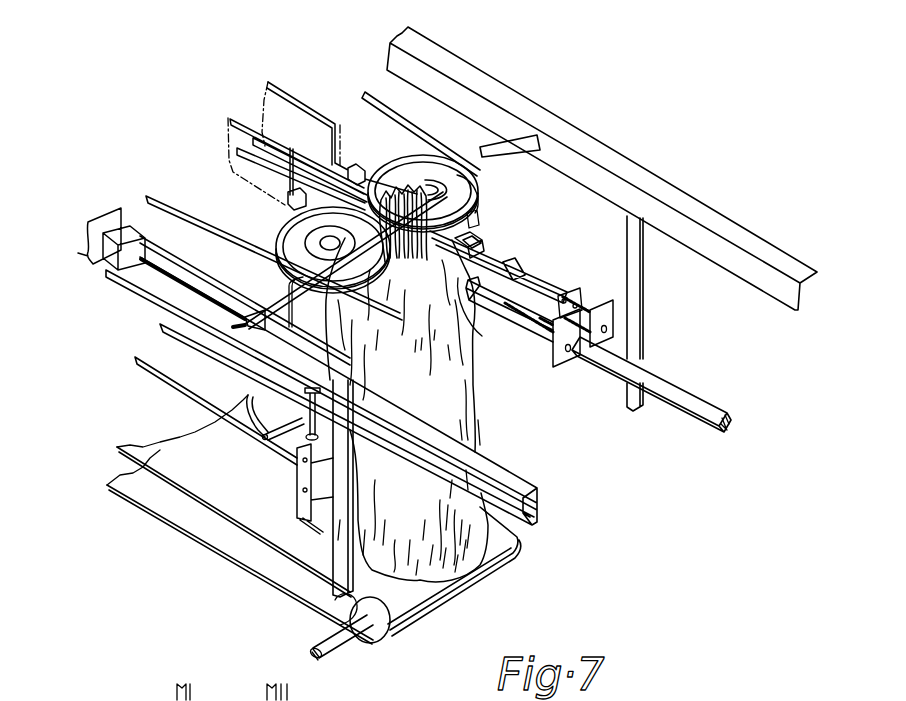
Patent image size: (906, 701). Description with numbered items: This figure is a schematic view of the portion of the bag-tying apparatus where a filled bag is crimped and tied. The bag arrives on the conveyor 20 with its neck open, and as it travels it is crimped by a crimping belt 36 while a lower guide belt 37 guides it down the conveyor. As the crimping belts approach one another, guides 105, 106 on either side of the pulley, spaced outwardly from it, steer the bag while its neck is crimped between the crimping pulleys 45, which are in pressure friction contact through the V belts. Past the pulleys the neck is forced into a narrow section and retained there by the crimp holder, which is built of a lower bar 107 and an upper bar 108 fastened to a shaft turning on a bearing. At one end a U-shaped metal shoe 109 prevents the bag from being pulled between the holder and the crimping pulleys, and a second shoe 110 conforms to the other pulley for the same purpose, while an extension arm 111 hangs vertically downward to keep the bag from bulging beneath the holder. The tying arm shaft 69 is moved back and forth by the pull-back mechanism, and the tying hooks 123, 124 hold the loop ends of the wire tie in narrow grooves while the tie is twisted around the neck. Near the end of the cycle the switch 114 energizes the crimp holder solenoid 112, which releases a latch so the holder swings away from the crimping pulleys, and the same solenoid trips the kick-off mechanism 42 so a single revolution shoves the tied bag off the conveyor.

The conveyor 20 is at (143, 450).
The crimping belt 36 is at (203, 222).
The lower guide belt 37 is at (183, 362).
The kick-off mechanism 42 is at (250, 396).
The crimping pulleys 45 is at (293, 256).
The tying arm shaft 69 is at (723, 381).
The guide 105 is at (233, 132).
The guide 106 is at (285, 99).
The lower bar of crimp holder 107 is at (488, 236).
The upper bar of crimp holder 108 is at (293, 234).
The shoe 109 is at (388, 340).
The second shoe 110 is at (480, 183).
The extension arm 111 is at (339, 224).
The crimp holder solenoid 112 is at (87, 258).
The switch 114 is at (293, 501).
The tying hook 123 is at (482, 336).
The tying hook 124 is at (484, 252).